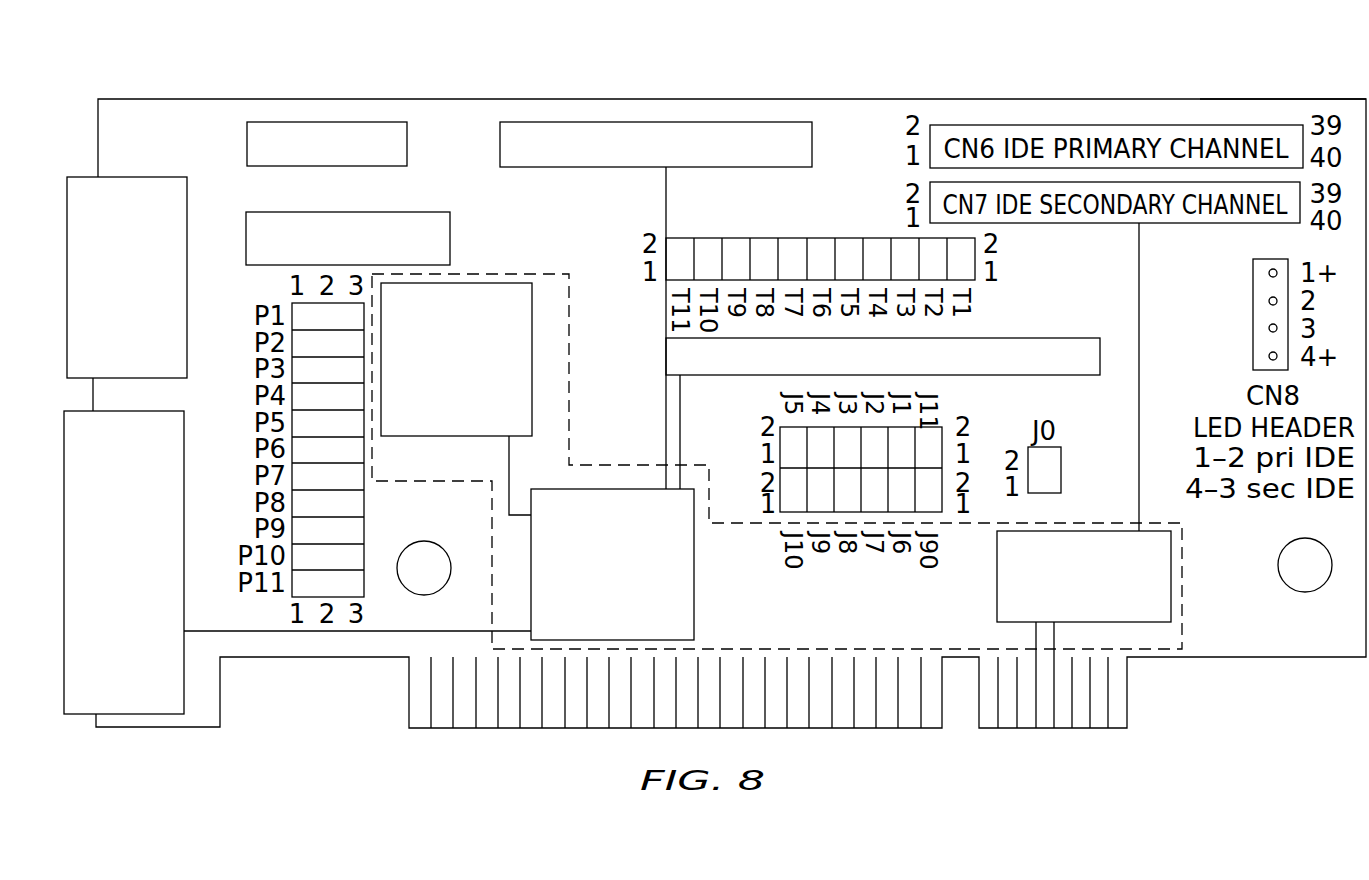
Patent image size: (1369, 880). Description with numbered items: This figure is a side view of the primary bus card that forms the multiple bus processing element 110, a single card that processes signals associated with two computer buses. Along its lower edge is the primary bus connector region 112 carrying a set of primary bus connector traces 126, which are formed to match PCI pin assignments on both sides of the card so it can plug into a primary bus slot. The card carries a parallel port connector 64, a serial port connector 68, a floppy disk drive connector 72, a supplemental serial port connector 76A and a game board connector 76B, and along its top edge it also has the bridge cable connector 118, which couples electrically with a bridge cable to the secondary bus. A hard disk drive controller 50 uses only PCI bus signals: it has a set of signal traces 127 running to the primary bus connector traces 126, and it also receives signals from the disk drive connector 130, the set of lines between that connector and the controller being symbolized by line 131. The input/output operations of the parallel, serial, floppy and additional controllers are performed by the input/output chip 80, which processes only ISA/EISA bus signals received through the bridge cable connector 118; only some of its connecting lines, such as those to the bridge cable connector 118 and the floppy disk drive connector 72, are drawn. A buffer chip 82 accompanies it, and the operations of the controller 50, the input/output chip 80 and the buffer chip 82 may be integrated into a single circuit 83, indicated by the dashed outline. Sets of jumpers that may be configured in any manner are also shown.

The multiple bus processing element 110 is at (731, 365).
The disk drive connector 130 is at (1283, 75).
The line 131 is at (1175, 377).
The bridge cable connector 118 is at (888, 370).
The hard disk drive controller 50 is at (1119, 576).
The signal traces 127 is at (995, 669).
The primary bus connector traces 126 is at (1059, 718).
The primary bus connector region 112 is at (837, 718).
The input/output chip 80 is at (644, 564).
The buffer chip 82 is at (498, 359).
The single circuit 83 is at (777, 440).
The floppy disk drive connector 72 is at (664, 118).
The supplemental serial port connector 76A is at (331, 111).
The game board connector 76B is at (373, 165).
The serial port connector 68 is at (95, 277).
The parallel port connector 64 is at (94, 562).